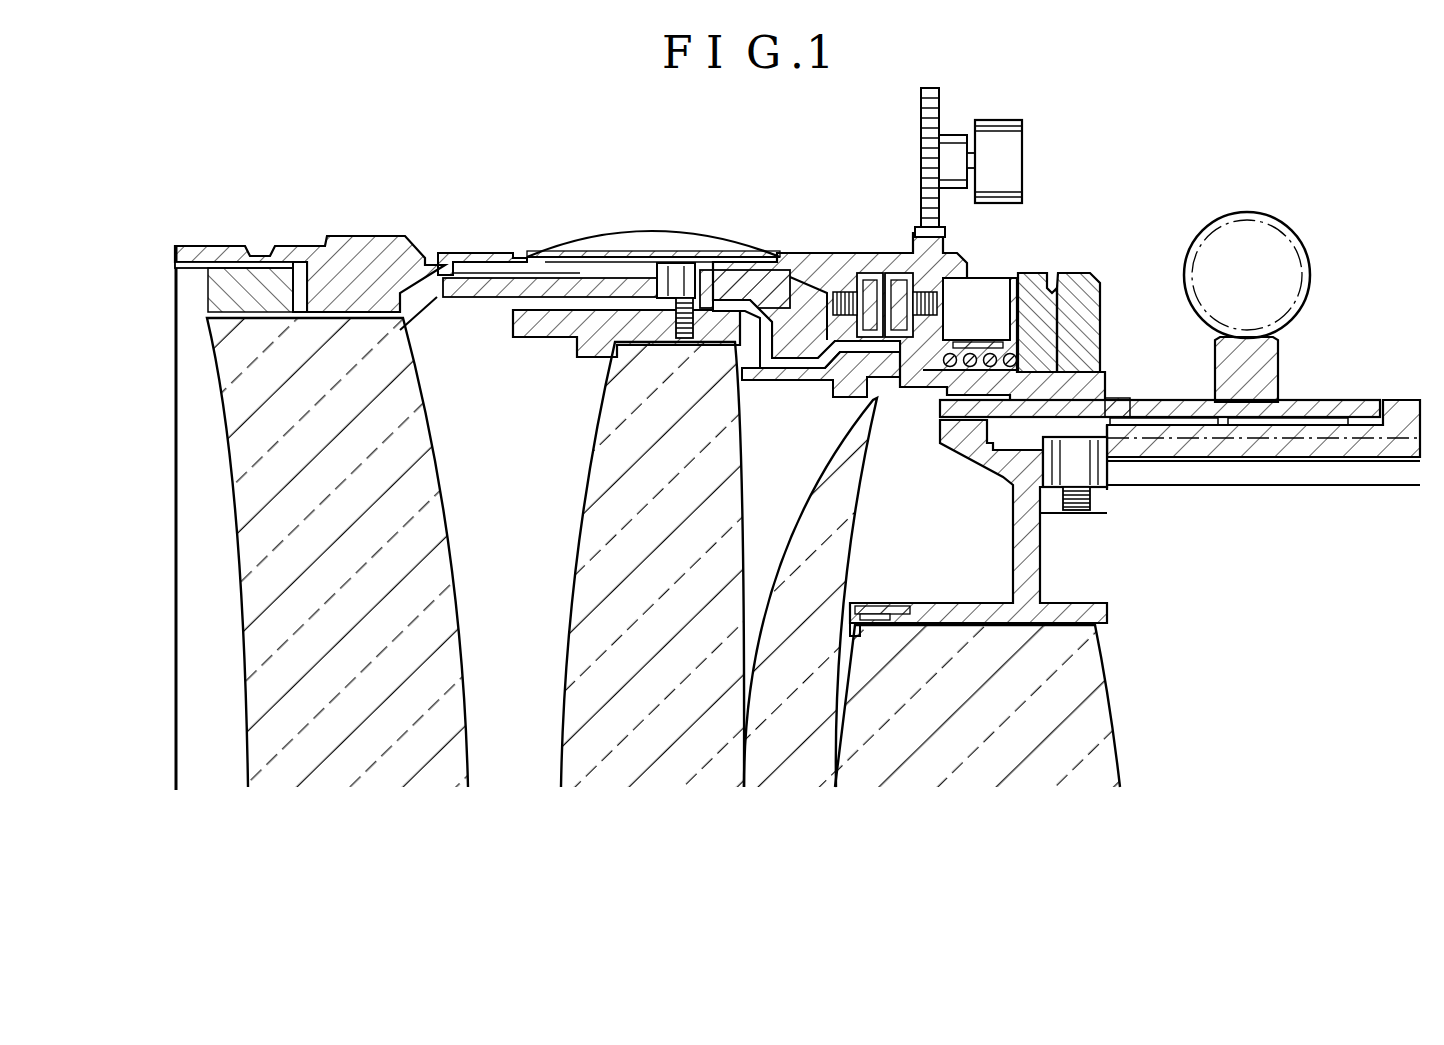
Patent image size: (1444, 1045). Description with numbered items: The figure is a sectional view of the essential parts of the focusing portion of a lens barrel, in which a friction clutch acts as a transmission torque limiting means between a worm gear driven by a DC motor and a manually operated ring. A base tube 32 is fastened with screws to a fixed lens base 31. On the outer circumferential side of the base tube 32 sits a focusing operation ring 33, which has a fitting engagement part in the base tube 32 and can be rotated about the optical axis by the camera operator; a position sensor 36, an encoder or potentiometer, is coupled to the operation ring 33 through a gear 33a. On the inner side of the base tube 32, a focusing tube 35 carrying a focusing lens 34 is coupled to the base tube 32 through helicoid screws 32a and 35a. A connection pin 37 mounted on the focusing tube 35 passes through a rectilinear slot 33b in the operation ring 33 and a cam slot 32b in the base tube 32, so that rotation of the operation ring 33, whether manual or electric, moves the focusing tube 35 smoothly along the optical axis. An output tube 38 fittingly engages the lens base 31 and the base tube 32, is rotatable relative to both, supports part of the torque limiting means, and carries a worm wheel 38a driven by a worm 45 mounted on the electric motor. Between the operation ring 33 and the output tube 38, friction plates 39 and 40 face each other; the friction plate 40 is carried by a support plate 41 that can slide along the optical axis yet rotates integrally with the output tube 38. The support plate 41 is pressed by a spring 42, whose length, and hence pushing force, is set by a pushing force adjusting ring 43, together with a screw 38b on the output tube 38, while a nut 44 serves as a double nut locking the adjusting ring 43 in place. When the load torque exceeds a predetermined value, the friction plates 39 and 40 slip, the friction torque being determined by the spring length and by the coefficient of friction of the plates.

The fixed lens base 31 is at (1400, 400).
The base tube 32 is at (370, 248).
The helicoid screw 32a is at (556, 335).
The cam slot 32b is at (645, 287).
The focusing operation ring 33 is at (476, 262).
The gear 33a is at (928, 135).
The rectilinear slot 33b is at (562, 268).
The focusing lens 34 is at (690, 735).
The focusing tube 35 is at (730, 290).
The helicoid screw 35a is at (607, 290).
The position sensor 36 is at (1001, 140).
The connection pin 37 is at (697, 265).
The output tube 38 is at (1198, 408).
The worm wheel 38a is at (1283, 358).
The screw 38b is at (1115, 410).
The friction plate 39 is at (847, 268).
The friction plate 40 is at (890, 268).
The support plate 41 is at (935, 330).
The spring 42 is at (970, 362).
The pushing force adjusting ring 43 is at (1042, 290).
The nut 44 is at (1093, 300).
The worm 45 is at (1252, 240).